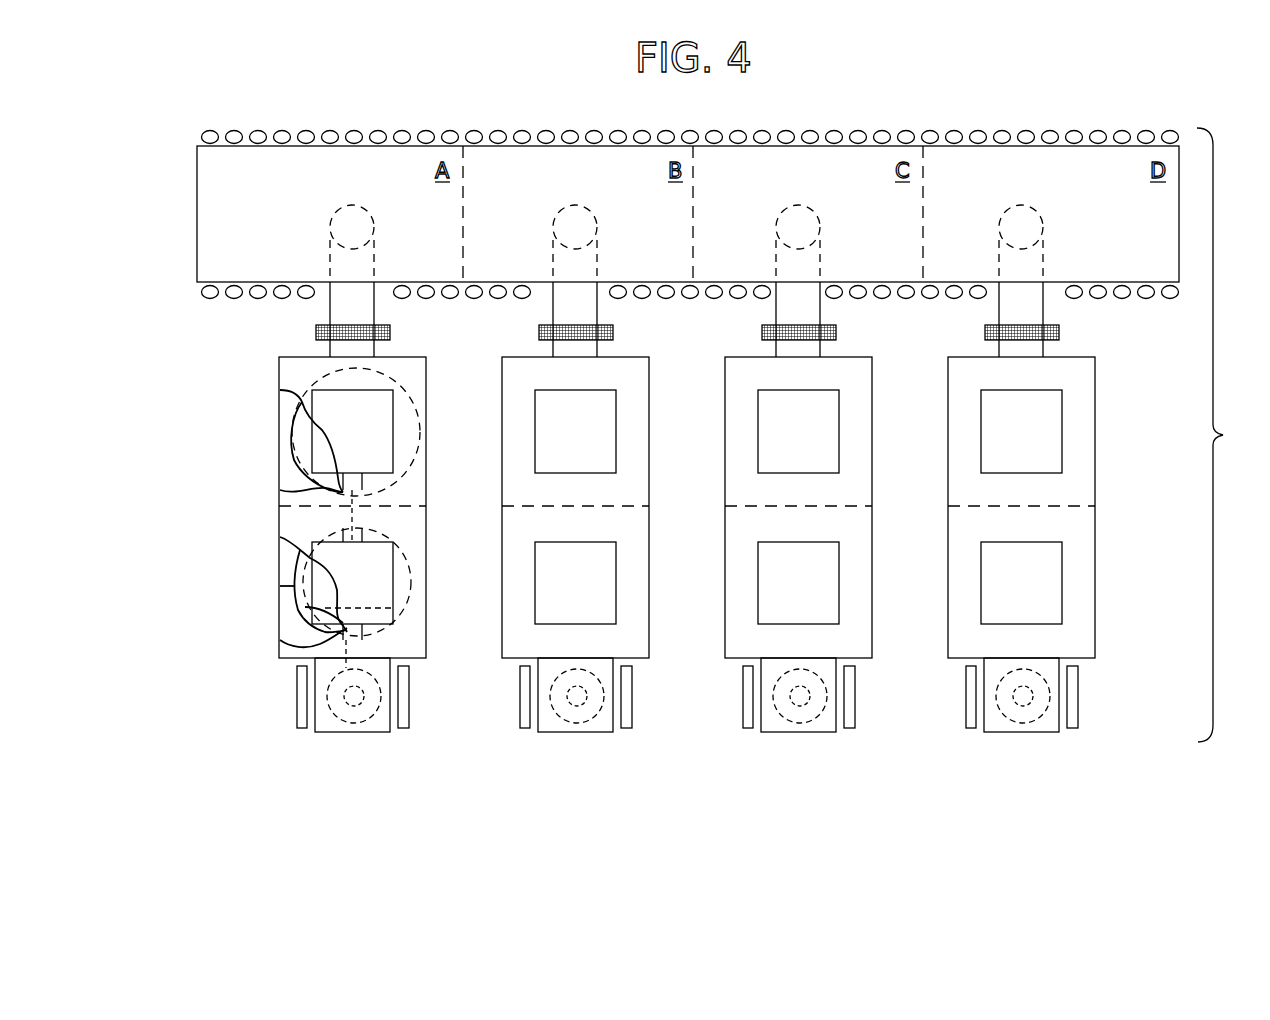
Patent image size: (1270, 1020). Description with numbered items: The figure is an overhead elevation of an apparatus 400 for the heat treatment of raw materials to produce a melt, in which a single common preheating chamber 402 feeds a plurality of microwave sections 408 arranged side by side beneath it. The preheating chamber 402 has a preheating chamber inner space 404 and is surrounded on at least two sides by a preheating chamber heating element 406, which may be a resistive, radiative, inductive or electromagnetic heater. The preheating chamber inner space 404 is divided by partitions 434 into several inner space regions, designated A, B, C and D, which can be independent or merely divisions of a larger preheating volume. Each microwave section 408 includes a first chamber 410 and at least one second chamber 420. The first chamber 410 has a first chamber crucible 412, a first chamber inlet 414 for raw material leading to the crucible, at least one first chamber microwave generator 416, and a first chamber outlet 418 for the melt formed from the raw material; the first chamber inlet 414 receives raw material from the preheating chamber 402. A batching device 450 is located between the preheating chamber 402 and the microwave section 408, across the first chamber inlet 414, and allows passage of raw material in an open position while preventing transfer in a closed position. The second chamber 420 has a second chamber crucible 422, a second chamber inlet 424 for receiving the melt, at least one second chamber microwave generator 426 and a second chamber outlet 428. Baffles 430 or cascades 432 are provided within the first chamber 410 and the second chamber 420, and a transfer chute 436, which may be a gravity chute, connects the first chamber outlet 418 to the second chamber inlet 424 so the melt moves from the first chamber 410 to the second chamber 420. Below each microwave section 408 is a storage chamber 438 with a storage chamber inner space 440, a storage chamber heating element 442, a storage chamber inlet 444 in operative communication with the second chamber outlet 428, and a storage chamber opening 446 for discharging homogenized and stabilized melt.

The apparatus 400 is at (1233, 435).
The preheating chamber 402 is at (437, 106).
The preheating chamber inner space 404 is at (254, 182).
The preheating chamber heating element 406 is at (891, 130).
The microwave section 408 is at (616, 516).
The first chamber 410 is at (420, 384).
The first chamber crucible 412 is at (296, 428).
The first chamber inlet 414 is at (316, 362).
The first chamber microwave generator 416 is at (381, 432).
The first chamber outlet 418 is at (368, 500).
The second chamber 420 is at (420, 537).
The second chamber crucible 422 is at (293, 587).
The second chamber inlet 424 is at (337, 517).
The second chamber microwave generator 426 is at (381, 584).
The second chamber outlet 428 is at (360, 648).
The baffle 430 is at (283, 630).
The cascade 432 is at (340, 549).
The partition 434 is at (467, 192).
The transfer chute 436 is at (366, 514).
The storage chamber 438 is at (378, 733).
The storage chamber inner space 440 is at (337, 708).
The storage chamber heating element 442 is at (410, 697).
The storage chamber inlet 444 is at (345, 665).
The storage chamber opening 446 is at (354, 703).
The batching device 450 is at (390, 329).